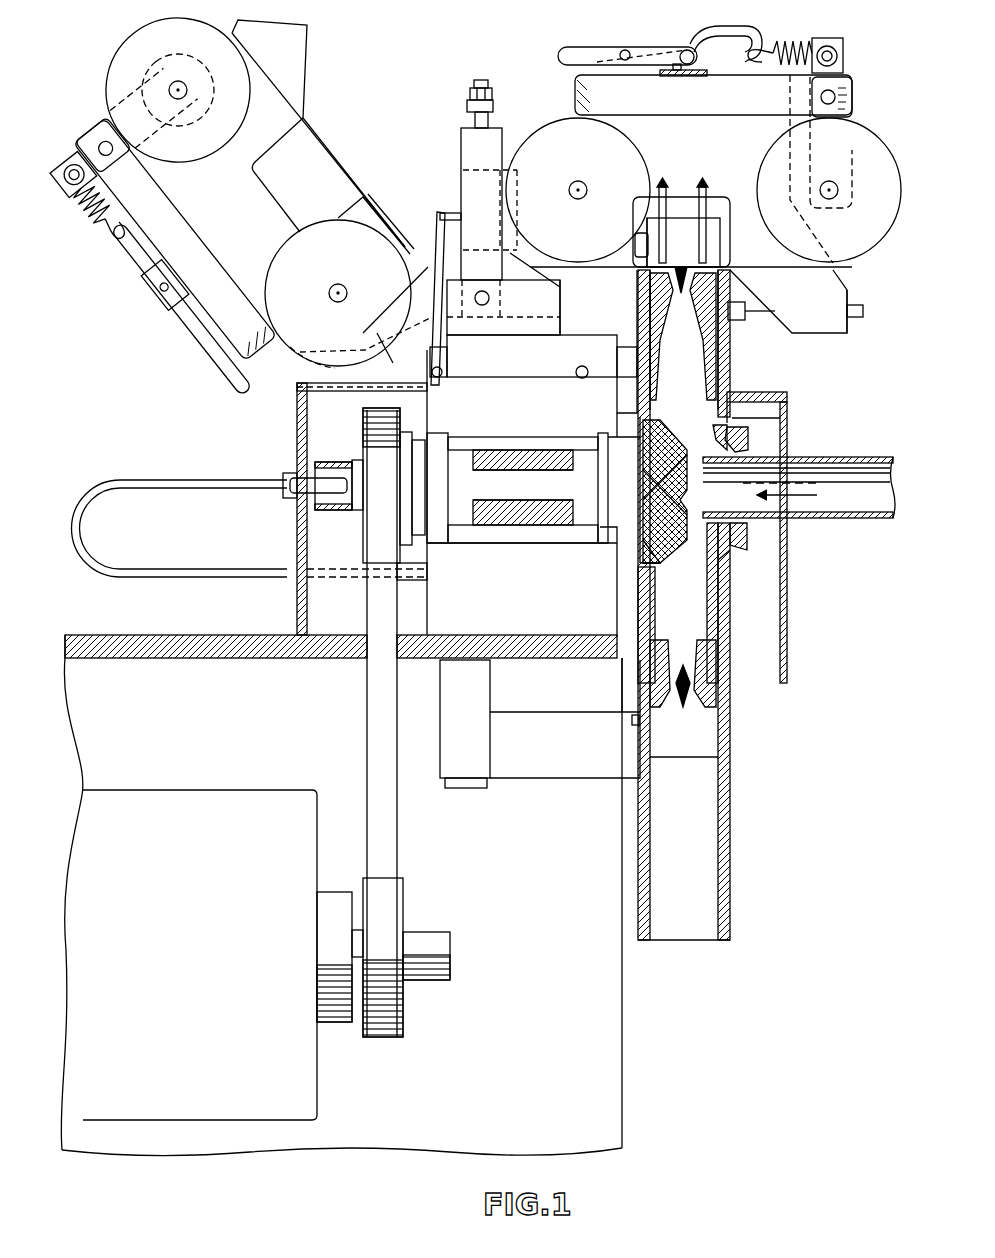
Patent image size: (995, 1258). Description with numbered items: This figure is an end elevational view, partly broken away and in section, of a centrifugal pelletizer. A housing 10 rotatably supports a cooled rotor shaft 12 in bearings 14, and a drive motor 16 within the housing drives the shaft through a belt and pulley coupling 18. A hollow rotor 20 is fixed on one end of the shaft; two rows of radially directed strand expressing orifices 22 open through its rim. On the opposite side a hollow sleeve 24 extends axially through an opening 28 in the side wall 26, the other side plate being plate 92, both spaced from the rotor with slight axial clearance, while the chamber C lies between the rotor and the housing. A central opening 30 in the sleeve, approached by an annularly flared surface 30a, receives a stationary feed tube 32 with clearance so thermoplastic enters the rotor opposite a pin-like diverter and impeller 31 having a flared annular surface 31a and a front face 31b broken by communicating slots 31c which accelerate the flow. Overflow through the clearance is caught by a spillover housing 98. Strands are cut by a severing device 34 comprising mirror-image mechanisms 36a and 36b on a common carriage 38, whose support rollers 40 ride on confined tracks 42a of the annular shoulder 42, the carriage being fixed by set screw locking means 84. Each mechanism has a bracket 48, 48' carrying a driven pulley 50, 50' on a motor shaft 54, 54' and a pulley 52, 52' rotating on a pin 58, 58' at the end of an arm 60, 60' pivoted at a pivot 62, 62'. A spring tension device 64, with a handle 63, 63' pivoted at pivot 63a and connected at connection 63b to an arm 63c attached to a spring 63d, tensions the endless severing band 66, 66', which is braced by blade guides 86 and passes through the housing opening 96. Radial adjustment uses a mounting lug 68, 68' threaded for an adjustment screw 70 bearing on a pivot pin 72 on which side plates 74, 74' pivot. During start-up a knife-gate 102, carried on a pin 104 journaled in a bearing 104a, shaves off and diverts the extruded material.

The housing 10 is at (293, 592).
The cooled rotor shaft 12 is at (515, 522).
The bearings 14 is at (597, 428).
The drive motor 16 is at (235, 970).
The belt and pulley coupling 18 is at (367, 738).
The hollow rotor 20 is at (718, 388).
The strand expressing orifices 22 is at (685, 263).
The hollow sleeve 24 is at (786, 413).
The side wall 26 is at (718, 342).
The opening 28 is at (727, 567).
The central opening 30 is at (748, 452).
The annularly flared surface 30a is at (720, 447).
The pin-like diverter and impeller 31 is at (670, 467).
The flared annular surface 31a is at (677, 527).
The front face 31b is at (637, 563).
The communicating slots 31c is at (610, 540).
The stationary feed tube 32 is at (868, 457).
The severing device 34 is at (538, 80).
The severing mechanism 36a is at (862, 117).
The severing mechanism 36b is at (100, 88).
The carriage 38 is at (558, 347).
The support rollers 40 is at (442, 360).
The annular shoulder 42 is at (582, 378).
The confined tracks 42a is at (437, 377).
The main frame or bracket 48 is at (713, 109).
The main frame or bracket 48' is at (174, 239).
The driven pulley 50 is at (595, 190).
The driven pulley 50' is at (325, 293).
The pulley 52 is at (812, 190).
The pulley 52' is at (178, 95).
The shaft 54 is at (561, 204).
The shaft 54' is at (315, 301).
The pin 58 is at (856, 198).
The pin 58' is at (170, 70).
The arm 60 is at (853, 169).
The arm 60' is at (165, 100).
The pivot 62 is at (854, 80).
The pivot 62' is at (87, 148).
The handle 63 is at (618, 44).
The handle 63' is at (162, 291).
The handle pivot 63a is at (692, 72).
The handle connection 63b is at (625, 55).
The arm 63c is at (700, 44).
The spring 63d is at (785, 72).
The spring tension device 64 is at (812, 36).
The endless severing band 66 is at (619, 240).
The endless severing band 66' is at (161, 297).
The mounting lug 68 is at (488, 174).
The mounting lug 68' is at (338, 288).
The adjustment screw 70 is at (472, 124).
The pivot pin 72 is at (489, 298).
The side plates 74 is at (467, 204).
The side plates 74' is at (365, 335).
The set screw locking means 84 is at (767, 322).
The blade guides 86 is at (681, 222).
The rotor housing side plate 92 is at (640, 598).
The opening 96 is at (640, 268).
The spillover housing 98 is at (788, 647).
The knife-gate 102 is at (737, 752).
The pin 104 is at (702, 752).
The bearing 104a is at (542, 778).
The chamber C is at (712, 233).